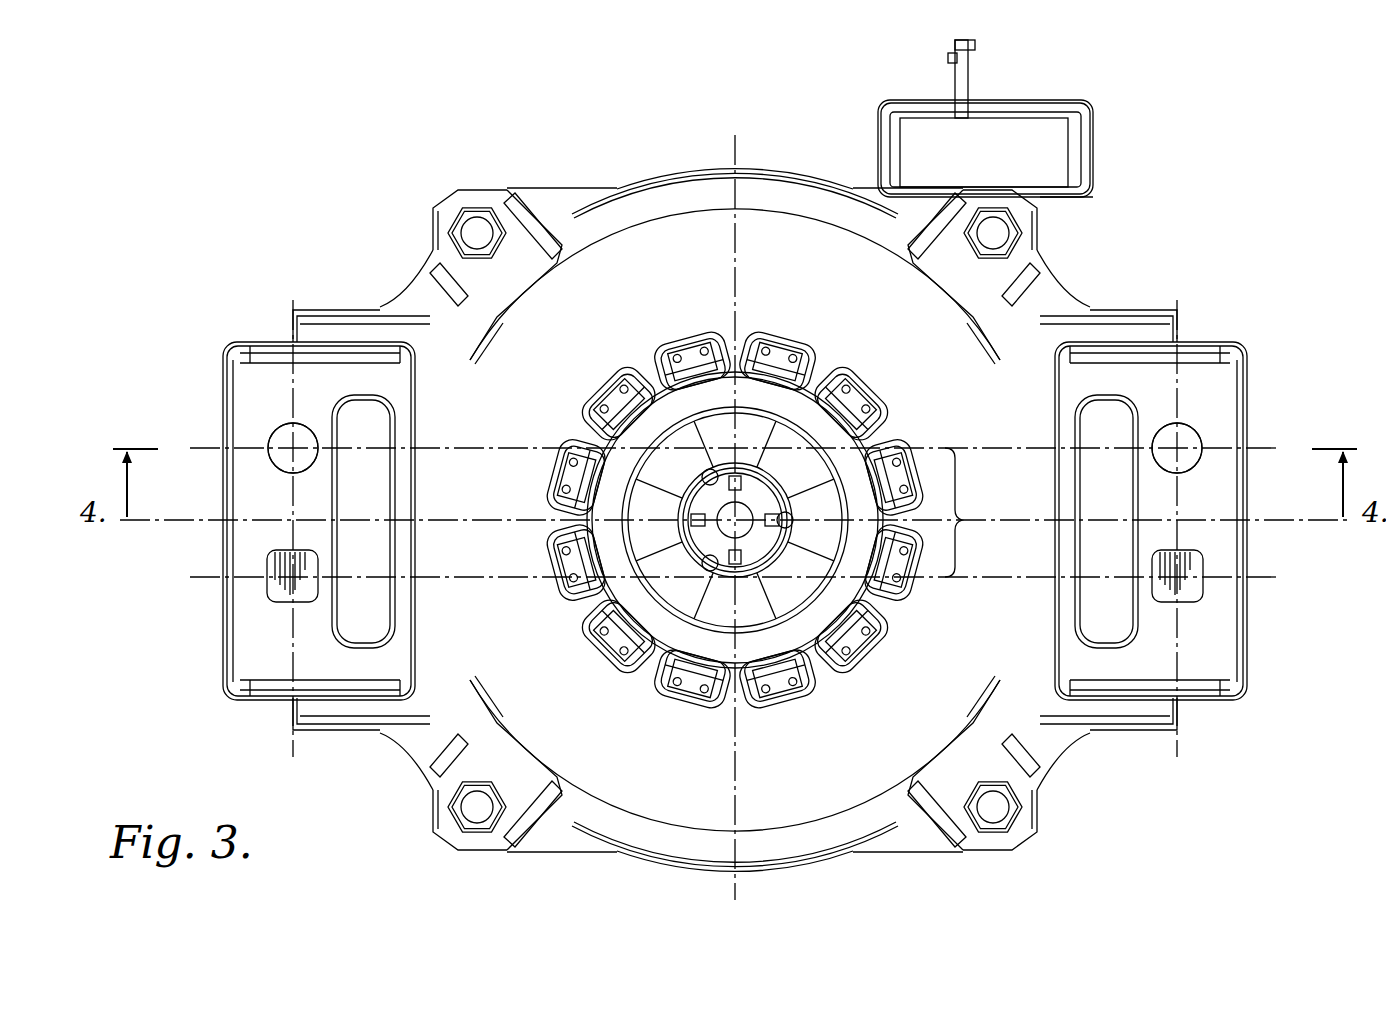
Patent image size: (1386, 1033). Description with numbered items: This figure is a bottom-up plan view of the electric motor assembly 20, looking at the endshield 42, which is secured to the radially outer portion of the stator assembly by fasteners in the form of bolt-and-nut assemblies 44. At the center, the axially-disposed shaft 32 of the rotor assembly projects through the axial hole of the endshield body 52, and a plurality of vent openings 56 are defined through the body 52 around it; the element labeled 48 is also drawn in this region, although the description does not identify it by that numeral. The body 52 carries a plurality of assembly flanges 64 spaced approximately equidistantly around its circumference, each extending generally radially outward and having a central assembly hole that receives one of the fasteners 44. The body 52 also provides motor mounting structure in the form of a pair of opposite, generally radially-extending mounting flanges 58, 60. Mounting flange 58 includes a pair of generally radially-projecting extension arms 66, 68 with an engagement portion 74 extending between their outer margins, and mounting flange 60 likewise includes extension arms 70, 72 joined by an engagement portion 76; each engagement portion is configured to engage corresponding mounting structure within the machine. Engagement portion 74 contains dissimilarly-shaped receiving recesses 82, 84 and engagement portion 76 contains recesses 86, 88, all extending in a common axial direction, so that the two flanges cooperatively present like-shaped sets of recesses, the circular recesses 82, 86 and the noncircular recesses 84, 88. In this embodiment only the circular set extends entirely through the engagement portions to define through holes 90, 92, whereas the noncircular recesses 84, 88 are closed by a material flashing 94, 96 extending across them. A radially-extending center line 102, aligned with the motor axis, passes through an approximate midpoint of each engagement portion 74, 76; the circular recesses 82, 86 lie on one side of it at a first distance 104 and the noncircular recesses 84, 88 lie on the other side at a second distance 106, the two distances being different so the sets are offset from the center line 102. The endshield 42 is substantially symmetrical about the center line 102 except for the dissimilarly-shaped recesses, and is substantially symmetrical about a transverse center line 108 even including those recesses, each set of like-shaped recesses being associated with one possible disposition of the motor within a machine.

The motor assembly 20 is at (693, 460).
The shaft 32 is at (750, 534).
The endshield 42 is at (790, 237).
The bolt-and-nut assemblies 44 is at (470, 231).
The stator 48 is at (702, 393).
The body 52 is at (607, 742).
The vent openings 56 is at (895, 408).
The mounting flange 58 is at (1213, 528).
The mounting flange 60 is at (266, 529).
The assembly flanges 64 is at (460, 198).
The extension arm 66 is at (1138, 352).
The extension arm 68 is at (1130, 692).
The extension arm 70 is at (330, 352).
The extension arm 72 is at (340, 692).
The engagement portion 74 is at (1240, 600).
The engagement portion 76 is at (246, 636).
The receiving recess 82 is at (1190, 456).
The receiving recess 84 is at (1192, 606).
The receiving recess 86 is at (284, 456).
The receiving recess 88 is at (302, 586).
The through hole 90 is at (1195, 438).
The through hole 92 is at (283, 440).
The material flashing 94 is at (1187, 567).
The material flashing 96 is at (287, 567).
The center line 102 is at (442, 517).
The first distance 104 is at (735, 512).
The second distance 106 is at (735, 554).
The transverse center line 108 is at (748, 778).